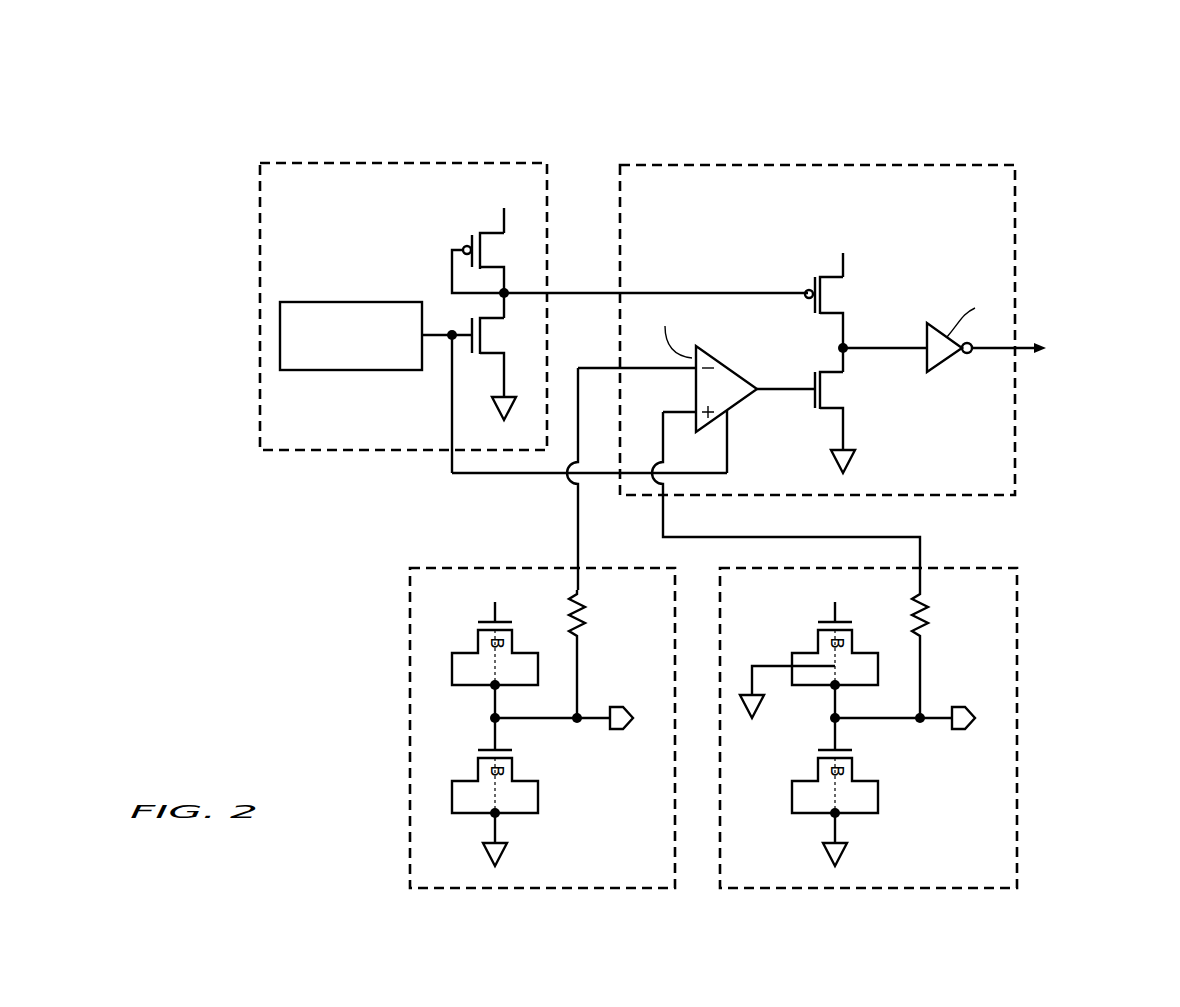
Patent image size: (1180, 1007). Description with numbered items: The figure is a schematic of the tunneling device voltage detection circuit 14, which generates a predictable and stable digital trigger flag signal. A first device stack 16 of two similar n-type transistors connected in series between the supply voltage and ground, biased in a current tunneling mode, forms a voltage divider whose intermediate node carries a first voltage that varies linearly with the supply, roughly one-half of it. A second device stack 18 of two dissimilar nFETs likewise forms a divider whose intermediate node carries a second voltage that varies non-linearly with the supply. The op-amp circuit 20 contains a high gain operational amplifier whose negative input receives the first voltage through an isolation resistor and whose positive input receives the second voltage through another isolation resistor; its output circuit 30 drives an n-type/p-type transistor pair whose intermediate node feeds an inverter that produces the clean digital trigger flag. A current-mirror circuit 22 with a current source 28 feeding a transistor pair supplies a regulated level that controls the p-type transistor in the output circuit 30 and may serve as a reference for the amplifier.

The tunneling device voltage detection circuit 14 is at (497, 99).
The current-mirror circuit 22 is at (402, 163).
The current source 28 is at (351, 336).
The op-amp circuit 20 is at (817, 165).
The output circuit 30 is at (988, 226).
The first device stack 16 is at (407, 727).
The second device stack 18 is at (1018, 730).